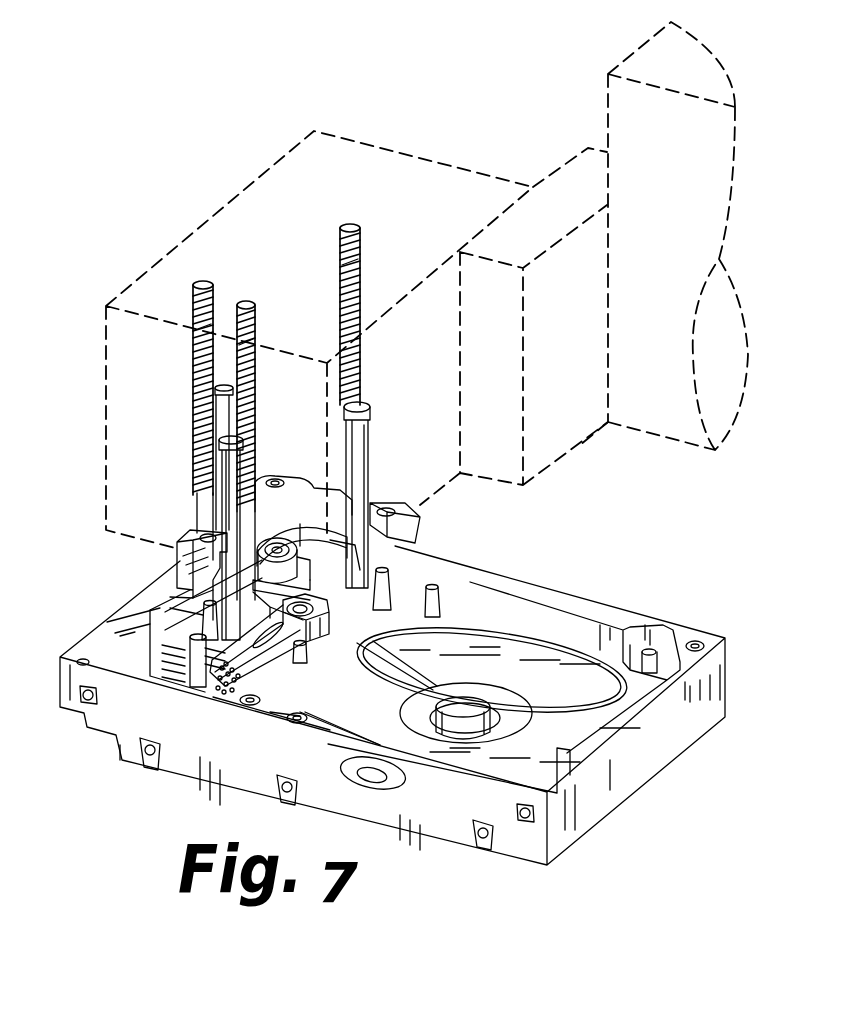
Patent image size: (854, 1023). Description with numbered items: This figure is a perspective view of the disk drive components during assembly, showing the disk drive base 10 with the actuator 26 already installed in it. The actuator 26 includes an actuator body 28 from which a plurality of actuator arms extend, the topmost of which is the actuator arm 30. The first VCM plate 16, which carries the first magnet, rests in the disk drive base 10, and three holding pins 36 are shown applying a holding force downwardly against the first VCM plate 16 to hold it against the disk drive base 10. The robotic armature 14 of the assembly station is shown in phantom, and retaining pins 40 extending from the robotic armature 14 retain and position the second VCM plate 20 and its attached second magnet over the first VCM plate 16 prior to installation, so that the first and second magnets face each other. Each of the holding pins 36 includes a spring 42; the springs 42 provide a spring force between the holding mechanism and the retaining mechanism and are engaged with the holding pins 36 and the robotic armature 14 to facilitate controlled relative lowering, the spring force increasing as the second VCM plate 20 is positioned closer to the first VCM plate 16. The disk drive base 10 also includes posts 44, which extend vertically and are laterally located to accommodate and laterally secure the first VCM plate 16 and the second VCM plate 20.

The disk drive base 10 is at (478, 580).
The robotic armature 14 is at (418, 163).
The first VCM plate 16 is at (418, 520).
The second VCM plate 20 is at (302, 492).
The actuator 26 is at (318, 636).
The actuator body 28 is at (312, 634).
The actuator arm 30 is at (228, 662).
The holding pins 36 is at (203, 283).
The retaining pins 40 is at (222, 422).
The springs 42 is at (215, 312).
The posts 44 is at (385, 590).